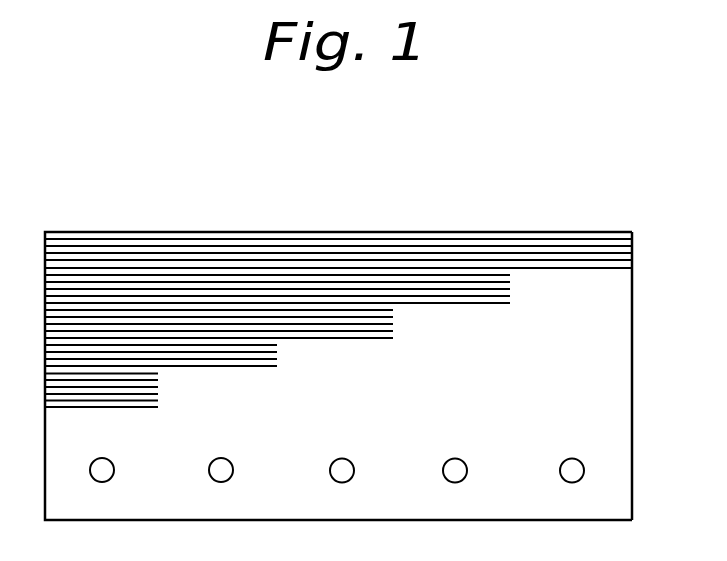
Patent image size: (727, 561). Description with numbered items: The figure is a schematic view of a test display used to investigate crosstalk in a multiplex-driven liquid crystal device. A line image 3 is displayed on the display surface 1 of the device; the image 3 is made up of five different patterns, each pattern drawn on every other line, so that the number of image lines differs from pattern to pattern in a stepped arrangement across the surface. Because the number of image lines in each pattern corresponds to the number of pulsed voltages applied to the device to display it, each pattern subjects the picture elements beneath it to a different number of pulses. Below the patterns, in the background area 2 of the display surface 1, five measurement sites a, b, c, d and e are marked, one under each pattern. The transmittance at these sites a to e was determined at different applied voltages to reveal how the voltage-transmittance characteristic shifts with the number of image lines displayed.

The display surface 1 is at (650, 250).
The background area 2 is at (617, 351).
The line image 3 is at (455, 252).
The site a is at (125, 456).
The site b is at (246, 455).
The site c is at (363, 453).
The site d is at (476, 453).
The site e is at (592, 453).